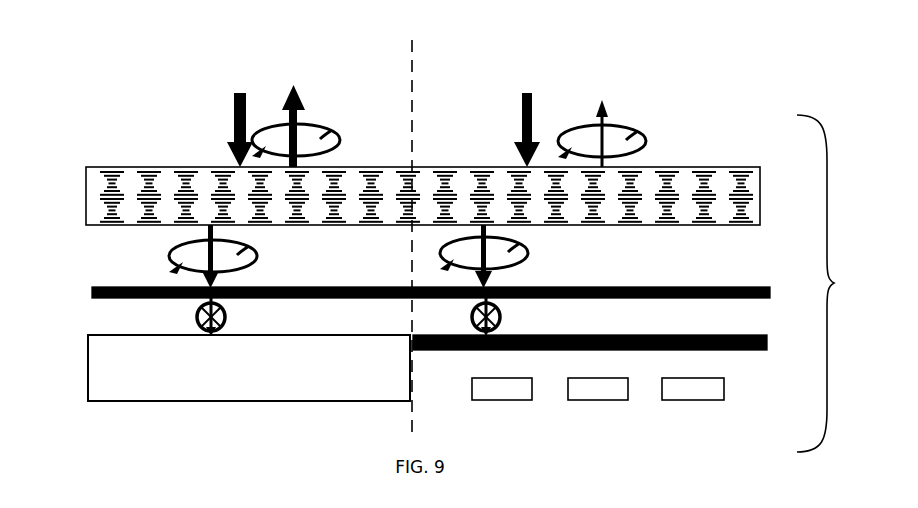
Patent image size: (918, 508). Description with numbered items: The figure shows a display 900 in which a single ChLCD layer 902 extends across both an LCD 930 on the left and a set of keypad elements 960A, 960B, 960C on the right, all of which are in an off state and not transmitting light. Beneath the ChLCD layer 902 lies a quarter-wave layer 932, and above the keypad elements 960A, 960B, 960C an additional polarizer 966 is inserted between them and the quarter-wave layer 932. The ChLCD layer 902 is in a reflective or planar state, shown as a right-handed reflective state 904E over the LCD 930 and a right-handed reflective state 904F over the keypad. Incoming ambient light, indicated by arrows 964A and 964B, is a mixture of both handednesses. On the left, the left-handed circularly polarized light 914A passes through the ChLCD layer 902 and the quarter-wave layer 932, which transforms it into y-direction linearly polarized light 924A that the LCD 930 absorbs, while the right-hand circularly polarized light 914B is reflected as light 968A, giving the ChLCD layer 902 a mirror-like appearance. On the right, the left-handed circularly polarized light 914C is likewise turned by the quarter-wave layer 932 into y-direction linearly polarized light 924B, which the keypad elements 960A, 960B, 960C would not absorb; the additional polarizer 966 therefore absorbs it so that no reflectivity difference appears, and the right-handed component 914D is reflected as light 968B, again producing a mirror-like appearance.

The display 900 is at (844, 283).
The ChLCD layer 902 is at (680, 167).
The right-handed reflective state 904E is at (140, 165).
The right-handed reflective state 904F is at (714, 167).
The left-handed circularly polarized light 914A is at (168, 257).
The right-hand circularly polarized light 914B is at (322, 118).
The left-handed circularly polarized light 914C is at (441, 250).
The fourth rotational motion 914D is at (619, 123).
The y-direction linearly polarized light 924A is at (232, 317).
The y-direction linearly polarized light 924B is at (506, 317).
The LCD 930 is at (87, 342).
The λ/4 layer 932 is at (662, 286).
The keypad element 960A is at (480, 401).
The keypad element 960B is at (572, 401).
The keypad element 960C is at (672, 401).
The ambient light 964A is at (233, 120).
The ambient light 964B is at (518, 120).
The additional polarizer 966 is at (688, 333).
The reflected light 968A is at (283, 103).
The reflected light 968B is at (598, 112).